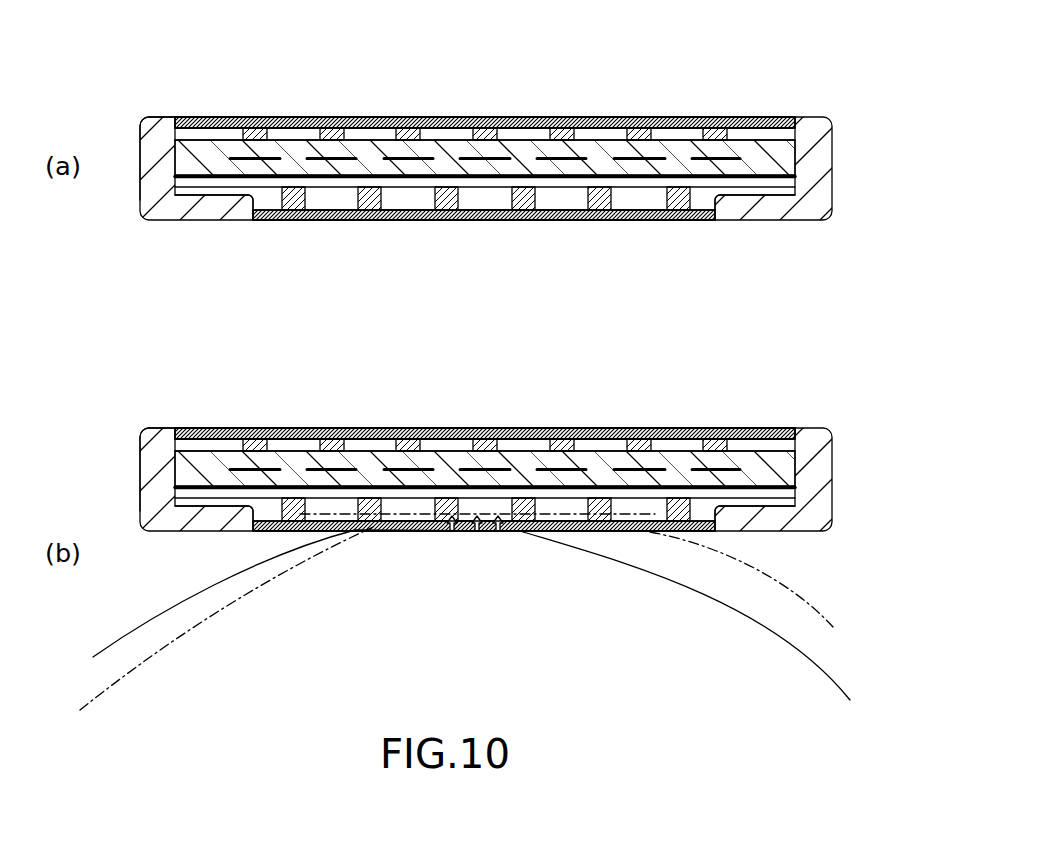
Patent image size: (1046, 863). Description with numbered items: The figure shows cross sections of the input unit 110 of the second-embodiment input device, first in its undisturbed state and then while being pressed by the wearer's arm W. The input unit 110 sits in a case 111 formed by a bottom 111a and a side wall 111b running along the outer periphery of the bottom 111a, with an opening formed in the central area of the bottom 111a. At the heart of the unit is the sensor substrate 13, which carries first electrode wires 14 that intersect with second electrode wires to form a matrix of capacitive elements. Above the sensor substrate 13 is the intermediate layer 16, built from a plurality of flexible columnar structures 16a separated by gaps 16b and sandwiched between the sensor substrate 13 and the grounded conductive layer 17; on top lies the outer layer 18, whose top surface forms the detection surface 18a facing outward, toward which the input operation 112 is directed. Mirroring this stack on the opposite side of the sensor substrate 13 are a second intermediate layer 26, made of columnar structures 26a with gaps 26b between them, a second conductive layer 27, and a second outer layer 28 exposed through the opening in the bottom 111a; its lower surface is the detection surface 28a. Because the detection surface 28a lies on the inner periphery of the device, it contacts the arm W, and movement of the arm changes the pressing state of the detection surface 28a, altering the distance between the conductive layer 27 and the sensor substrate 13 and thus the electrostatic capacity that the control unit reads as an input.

The input unit 110 is at (520, 308).
The case 111 is at (491, 367).
The bottom 111a is at (206, 222).
The side wall 111b is at (153, 117).
The display surface 112 is at (586, 92).
The sensor substrate 13 is at (792, 177).
The first electrode wires 14 is at (660, 148).
The intermediate layer 16 is at (520, 274).
The columnar structures 16a is at (243, 128).
The gap 16b is at (283, 130).
The conductive layer 17 is at (728, 123).
The outer layer 18 is at (523, 228).
The detection surface 18a is at (366, 117).
The intermediate layer 26 is at (523, 384).
The columnar structures 26a is at (530, 205).
The sensor gap 26b is at (488, 200).
The conductive layer 27 is at (700, 222).
The outer layer 28 is at (562, 408).
The detection surface 28a is at (406, 221).
The wrist W is at (808, 682).